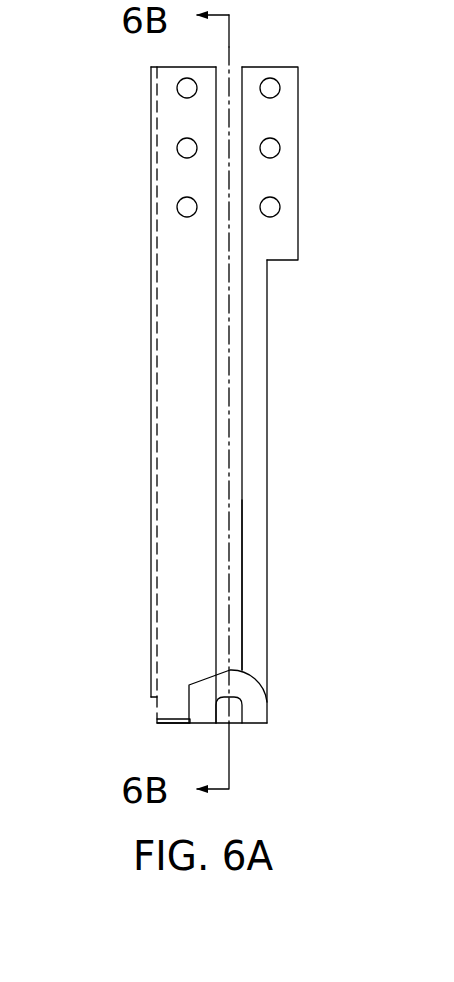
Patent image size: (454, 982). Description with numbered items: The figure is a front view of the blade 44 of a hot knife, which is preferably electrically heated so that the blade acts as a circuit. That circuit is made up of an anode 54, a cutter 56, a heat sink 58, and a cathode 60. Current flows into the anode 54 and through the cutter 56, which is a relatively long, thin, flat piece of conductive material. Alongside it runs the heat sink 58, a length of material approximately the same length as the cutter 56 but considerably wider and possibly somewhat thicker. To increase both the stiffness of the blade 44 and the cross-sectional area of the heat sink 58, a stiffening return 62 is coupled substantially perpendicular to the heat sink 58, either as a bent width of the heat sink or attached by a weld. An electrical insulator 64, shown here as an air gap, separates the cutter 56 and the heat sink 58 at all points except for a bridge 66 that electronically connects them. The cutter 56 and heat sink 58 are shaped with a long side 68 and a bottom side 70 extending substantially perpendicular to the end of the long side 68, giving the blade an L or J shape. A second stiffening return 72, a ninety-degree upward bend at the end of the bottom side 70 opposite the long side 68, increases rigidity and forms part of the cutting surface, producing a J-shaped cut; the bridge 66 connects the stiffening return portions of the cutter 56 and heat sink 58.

The blade 44 is at (258, 545).
The anode 54 is at (312, 87).
The cutter 56 is at (258, 394).
The heat sink 58 is at (185, 382).
The cathode 60 is at (112, 117).
The stiffening return 62 is at (151, 260).
The electrical insulator 64 is at (230, 312).
The bridge 66 is at (232, 685).
The long side 68 is at (258, 467).
The bottom side 70 is at (170, 725).
The stiffening return 72 is at (257, 714).